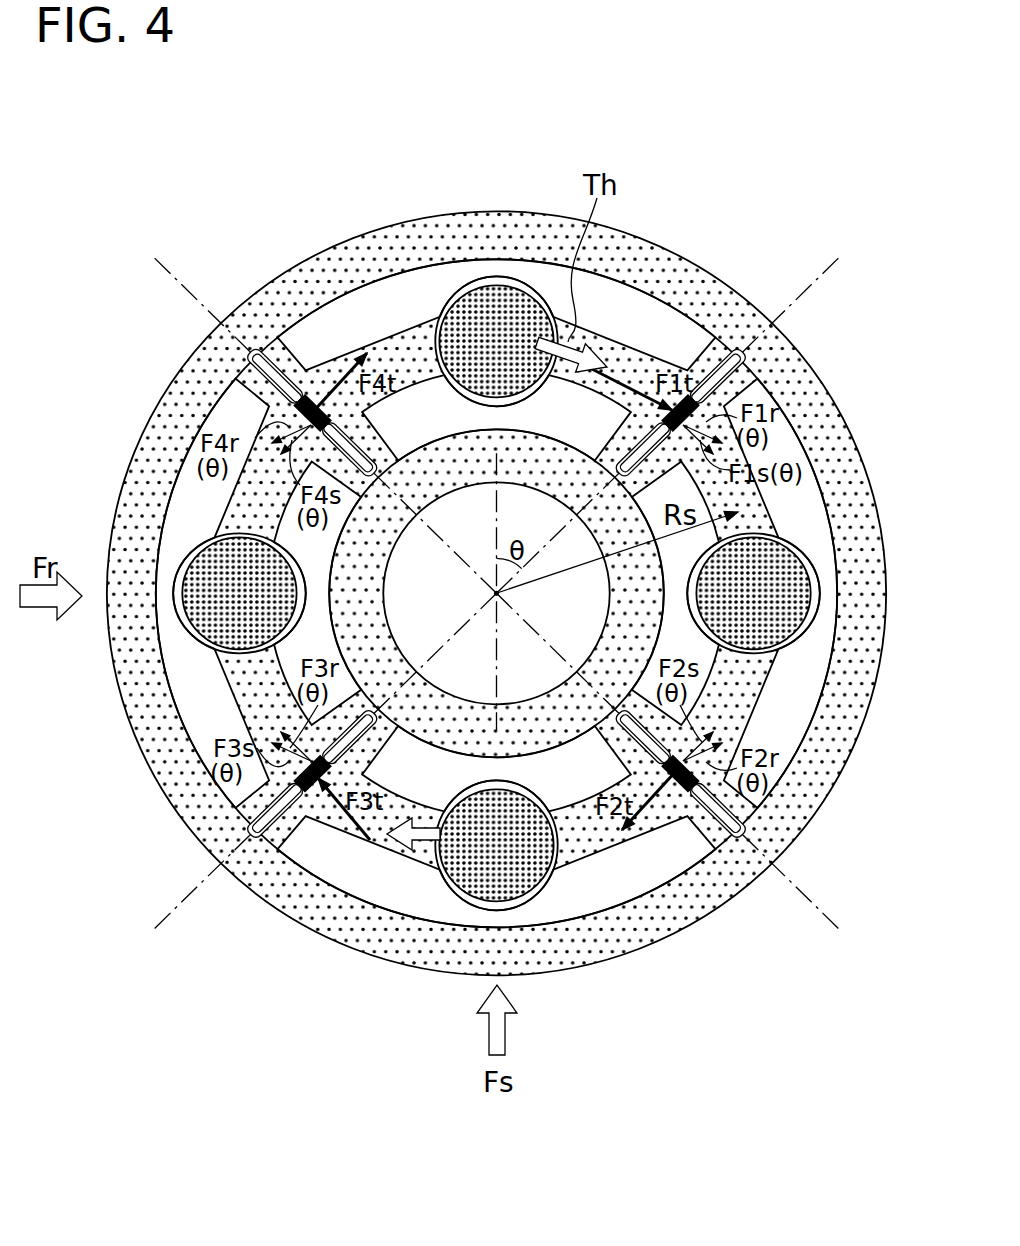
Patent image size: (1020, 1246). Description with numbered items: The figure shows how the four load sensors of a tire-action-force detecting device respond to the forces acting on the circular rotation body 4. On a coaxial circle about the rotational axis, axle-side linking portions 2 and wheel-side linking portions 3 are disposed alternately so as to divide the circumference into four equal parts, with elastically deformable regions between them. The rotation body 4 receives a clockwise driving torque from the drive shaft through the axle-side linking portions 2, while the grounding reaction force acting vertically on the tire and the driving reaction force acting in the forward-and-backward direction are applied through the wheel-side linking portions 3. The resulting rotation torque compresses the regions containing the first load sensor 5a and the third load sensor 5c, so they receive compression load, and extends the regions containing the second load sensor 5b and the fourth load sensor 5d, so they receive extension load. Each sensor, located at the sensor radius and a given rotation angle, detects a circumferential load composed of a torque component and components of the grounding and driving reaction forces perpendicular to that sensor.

The axle-side linking portion 2 is at (494, 302).
The wheel-side linking portion 3 is at (200, 574).
The rotation body 4 is at (403, 958).
The first load sensor 5a is at (746, 355).
The second load sensor 5b is at (737, 842).
The third load sensor 5c is at (264, 838).
The fourth load sensor 5d is at (257, 358).